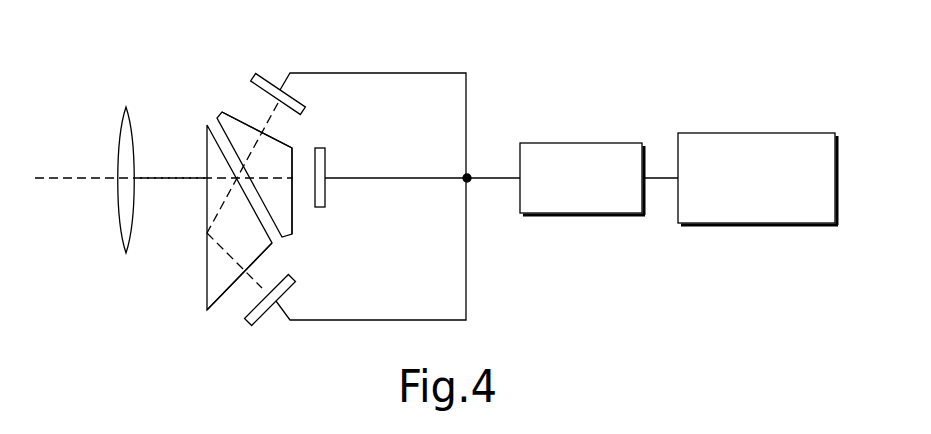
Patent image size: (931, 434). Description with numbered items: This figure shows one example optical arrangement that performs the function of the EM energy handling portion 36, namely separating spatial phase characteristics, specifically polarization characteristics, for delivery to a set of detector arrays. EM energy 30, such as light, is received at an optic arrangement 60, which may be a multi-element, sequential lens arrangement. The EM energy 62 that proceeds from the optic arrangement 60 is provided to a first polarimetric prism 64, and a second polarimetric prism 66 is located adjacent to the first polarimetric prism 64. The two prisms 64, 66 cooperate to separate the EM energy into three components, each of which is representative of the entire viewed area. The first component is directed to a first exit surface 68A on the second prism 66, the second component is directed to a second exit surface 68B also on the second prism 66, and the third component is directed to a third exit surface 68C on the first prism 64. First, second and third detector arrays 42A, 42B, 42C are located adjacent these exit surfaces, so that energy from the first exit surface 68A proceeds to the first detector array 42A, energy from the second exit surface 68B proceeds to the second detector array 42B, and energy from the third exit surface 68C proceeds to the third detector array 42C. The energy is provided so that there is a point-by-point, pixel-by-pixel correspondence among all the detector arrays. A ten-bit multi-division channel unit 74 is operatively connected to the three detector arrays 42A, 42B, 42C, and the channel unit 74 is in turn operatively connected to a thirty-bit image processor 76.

The EM energy 30 is at (78, 178).
The EM energy handling portion 36 is at (378, 30).
The first detector array 42A is at (263, 75).
The second detector array 42B is at (326, 162).
The third detector array 42C is at (296, 281).
The optic arrangement 60 is at (135, 122).
The EM energy 62 is at (190, 178).
The first polarimetric prism 64 is at (208, 266).
The second polarimetric prism 66 is at (237, 115).
The first exit surface 68A is at (284, 140).
The second exit surface 68B is at (293, 218).
The third exit surface 68C is at (225, 297).
The 10-bit multi-division channel unit 74 is at (627, 152).
The 30-bit image processor 76 is at (825, 143).